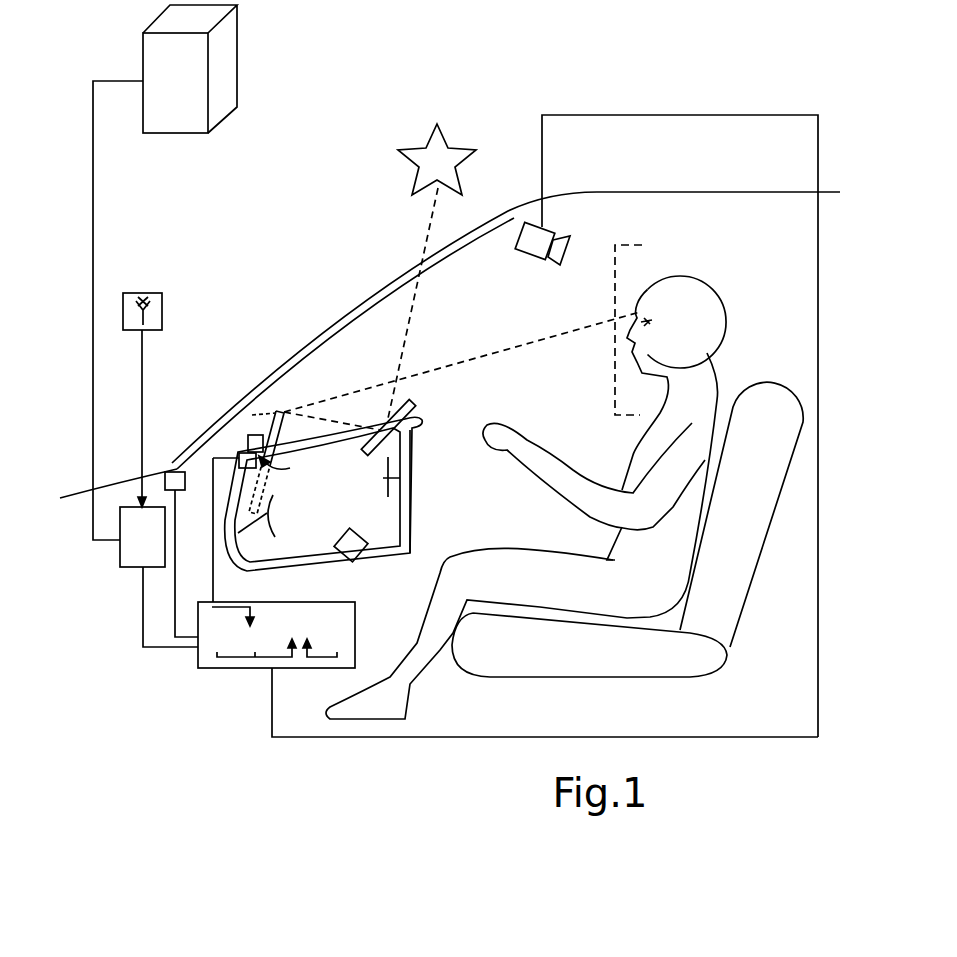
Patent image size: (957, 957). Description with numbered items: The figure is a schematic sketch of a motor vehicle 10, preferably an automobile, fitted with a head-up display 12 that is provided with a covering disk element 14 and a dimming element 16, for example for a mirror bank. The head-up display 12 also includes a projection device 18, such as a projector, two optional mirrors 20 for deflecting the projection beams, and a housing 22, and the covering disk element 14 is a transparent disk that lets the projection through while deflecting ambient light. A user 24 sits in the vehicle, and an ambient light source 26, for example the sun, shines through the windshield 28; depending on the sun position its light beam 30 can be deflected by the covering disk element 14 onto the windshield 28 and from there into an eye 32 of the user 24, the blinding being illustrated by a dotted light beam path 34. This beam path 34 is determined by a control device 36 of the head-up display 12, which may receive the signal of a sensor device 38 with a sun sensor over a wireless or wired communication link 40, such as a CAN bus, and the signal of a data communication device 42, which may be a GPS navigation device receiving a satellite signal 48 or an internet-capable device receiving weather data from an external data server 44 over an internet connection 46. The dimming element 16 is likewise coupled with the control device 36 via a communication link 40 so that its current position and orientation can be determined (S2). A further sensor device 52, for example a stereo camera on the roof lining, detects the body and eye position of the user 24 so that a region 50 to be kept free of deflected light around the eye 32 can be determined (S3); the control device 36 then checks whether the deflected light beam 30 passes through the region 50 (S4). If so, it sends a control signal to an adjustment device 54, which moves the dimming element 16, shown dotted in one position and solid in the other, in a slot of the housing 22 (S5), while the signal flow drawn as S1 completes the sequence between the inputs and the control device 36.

The motor vehicle 10 is at (680, 192).
The head-up display 12 is at (378, 578).
The covering disk element 14 is at (354, 441).
The dimming element 16 is at (290, 403).
The projection device 18 is at (380, 537).
The mirrors 20 is at (272, 522).
The housing 22 is at (411, 488).
The user 24 is at (731, 393).
The ambient light source 26 is at (440, 142).
The windshield 28 is at (350, 316).
The light beam 30 is at (428, 240).
The eye 32 is at (648, 320).
The light beam path 34 is at (433, 365).
The control device 36 is at (276, 660).
The sensor device 38 is at (172, 470).
The communication link 40 is at (262, 433).
The data communication device 42 is at (120, 553).
The data server 44 is at (237, 62).
The internet connection 46 is at (93, 228).
The satellite signal 48 is at (162, 310).
The region to be kept free 50 is at (613, 273).
The sensor device 52 is at (532, 258).
The adjustment device 54 is at (240, 447).
The signal S1 is at (218, 644).
The determination of current position and orientation S2 is at (240, 631).
The determination of region to be kept free S3 is at (325, 644).
The determination whether light beam passes through region S4 is at (263, 637).
The moving of dimming element S5 is at (289, 469).